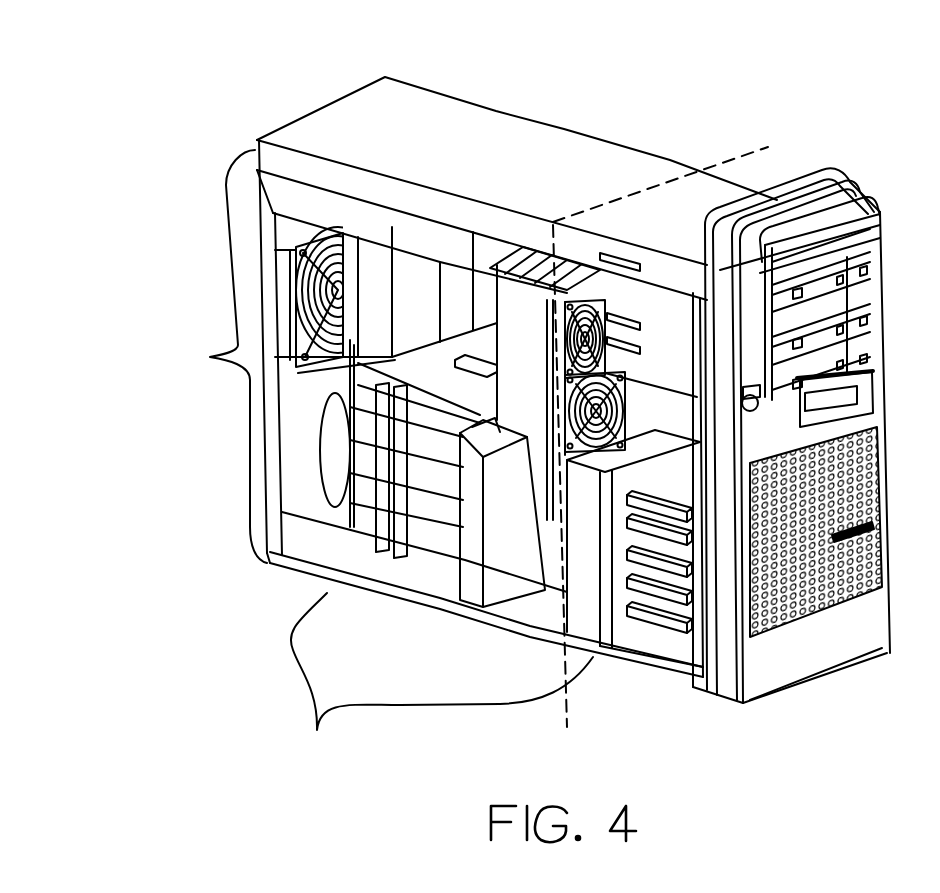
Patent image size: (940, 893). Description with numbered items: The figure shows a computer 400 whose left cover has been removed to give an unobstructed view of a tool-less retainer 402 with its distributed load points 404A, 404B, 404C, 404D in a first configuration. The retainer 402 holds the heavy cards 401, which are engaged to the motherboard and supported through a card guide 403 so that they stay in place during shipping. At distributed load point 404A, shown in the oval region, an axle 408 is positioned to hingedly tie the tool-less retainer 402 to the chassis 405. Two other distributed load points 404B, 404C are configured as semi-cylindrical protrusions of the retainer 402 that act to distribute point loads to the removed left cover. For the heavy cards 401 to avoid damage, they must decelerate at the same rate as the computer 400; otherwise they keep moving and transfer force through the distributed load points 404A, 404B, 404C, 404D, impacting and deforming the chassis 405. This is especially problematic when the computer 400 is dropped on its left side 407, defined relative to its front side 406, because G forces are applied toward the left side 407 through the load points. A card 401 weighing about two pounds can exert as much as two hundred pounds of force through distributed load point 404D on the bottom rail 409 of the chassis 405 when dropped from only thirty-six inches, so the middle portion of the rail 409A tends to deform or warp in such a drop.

The computer 400 is at (714, 90).
The heavy cards 401 is at (452, 474).
The tool-less retainer 402 is at (443, 399).
The card guide 403 is at (578, 593).
The distributed load point 404A is at (335, 450).
The distributed load point 404B is at (493, 464).
The distributed load point 404C is at (502, 520).
The distributed load point 404D is at (468, 495).
The chassis 405 is at (310, 552).
The front side 406 is at (897, 600).
The left side 407 is at (211, 356).
The axle 408 is at (312, 376).
The bottom rail 409 is at (497, 642).
The middle portion of the rail 409A is at (441, 679).